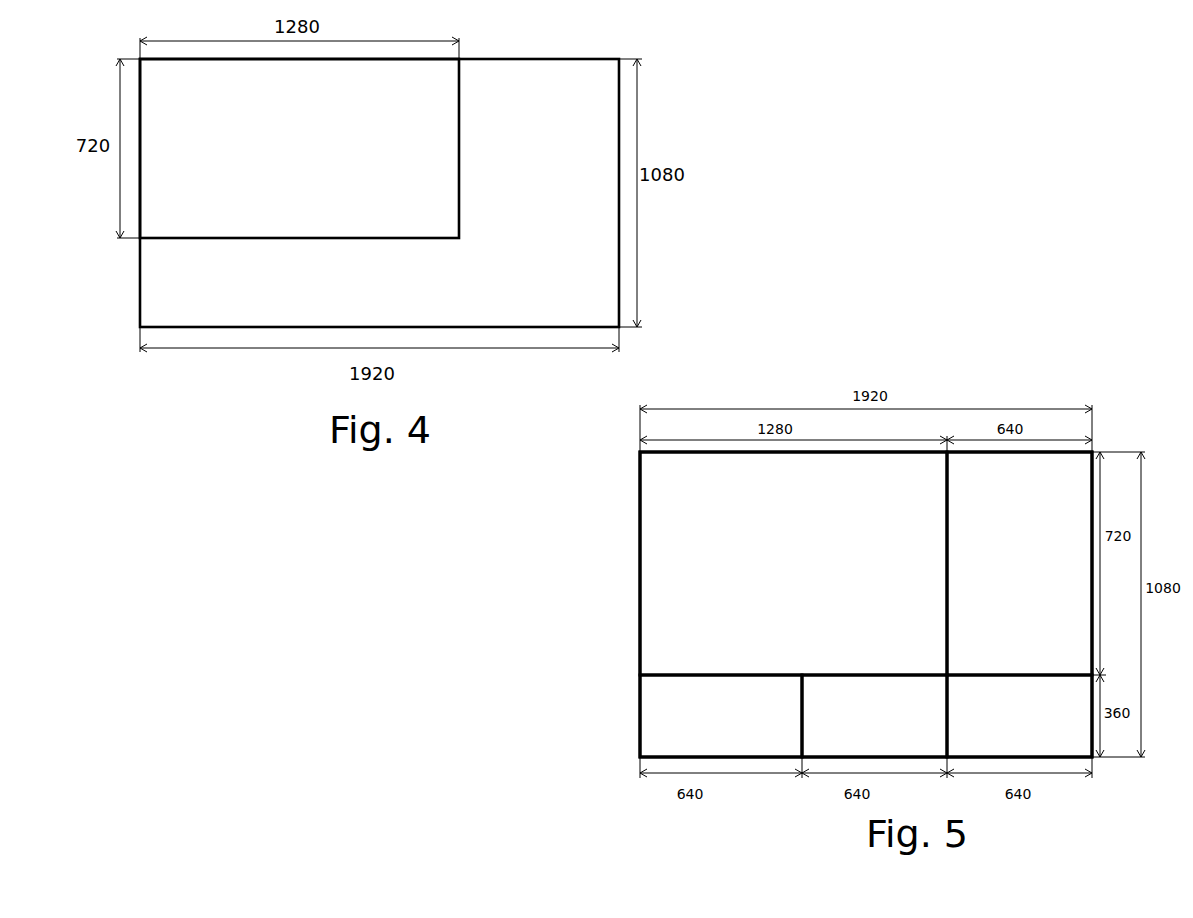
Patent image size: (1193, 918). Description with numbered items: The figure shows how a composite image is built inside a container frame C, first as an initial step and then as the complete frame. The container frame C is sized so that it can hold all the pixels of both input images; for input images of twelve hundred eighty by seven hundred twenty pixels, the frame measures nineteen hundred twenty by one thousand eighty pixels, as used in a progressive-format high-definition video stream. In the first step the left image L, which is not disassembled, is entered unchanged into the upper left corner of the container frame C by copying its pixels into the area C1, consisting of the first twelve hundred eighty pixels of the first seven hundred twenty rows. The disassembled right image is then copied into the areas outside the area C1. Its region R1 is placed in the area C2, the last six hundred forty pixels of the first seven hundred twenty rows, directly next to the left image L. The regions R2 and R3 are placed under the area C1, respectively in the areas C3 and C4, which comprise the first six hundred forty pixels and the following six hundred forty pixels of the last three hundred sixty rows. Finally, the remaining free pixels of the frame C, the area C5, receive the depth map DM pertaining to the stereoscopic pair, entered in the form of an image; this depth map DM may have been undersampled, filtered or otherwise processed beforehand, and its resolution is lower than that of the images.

In FIG. 4, the container frame C is at (638, 117).
In FIG. 4, the area C1 is at (187, 201).
In FIG. 5, the area C1 is at (675, 537).
In FIG. 5, the area C2 is at (973, 480).
In FIG. 5, the area C3 is at (657, 724).
In FIG. 5, the area C4 is at (836, 742).
In FIG. 5, the area C5 is at (1038, 745).
In FIG. 4, the left image L is at (299, 143).
In FIG. 5, the left image L is at (795, 561).
In FIG. 5, the region R1 is at (1018, 561).
In FIG. 5, the region R2 is at (715, 722).
In FIG. 5, the region R3 is at (870, 722).
In FIG. 5, the depth map DM is at (1015, 722).